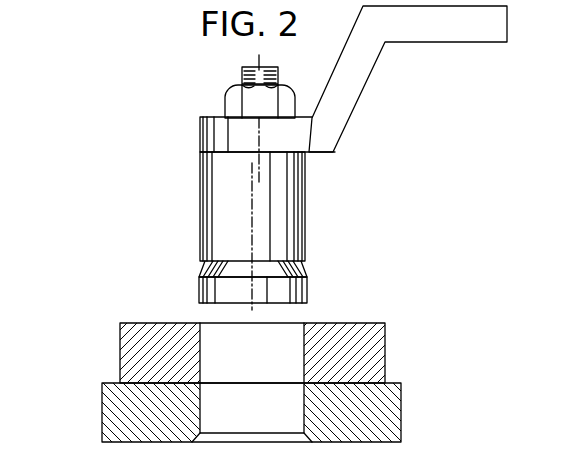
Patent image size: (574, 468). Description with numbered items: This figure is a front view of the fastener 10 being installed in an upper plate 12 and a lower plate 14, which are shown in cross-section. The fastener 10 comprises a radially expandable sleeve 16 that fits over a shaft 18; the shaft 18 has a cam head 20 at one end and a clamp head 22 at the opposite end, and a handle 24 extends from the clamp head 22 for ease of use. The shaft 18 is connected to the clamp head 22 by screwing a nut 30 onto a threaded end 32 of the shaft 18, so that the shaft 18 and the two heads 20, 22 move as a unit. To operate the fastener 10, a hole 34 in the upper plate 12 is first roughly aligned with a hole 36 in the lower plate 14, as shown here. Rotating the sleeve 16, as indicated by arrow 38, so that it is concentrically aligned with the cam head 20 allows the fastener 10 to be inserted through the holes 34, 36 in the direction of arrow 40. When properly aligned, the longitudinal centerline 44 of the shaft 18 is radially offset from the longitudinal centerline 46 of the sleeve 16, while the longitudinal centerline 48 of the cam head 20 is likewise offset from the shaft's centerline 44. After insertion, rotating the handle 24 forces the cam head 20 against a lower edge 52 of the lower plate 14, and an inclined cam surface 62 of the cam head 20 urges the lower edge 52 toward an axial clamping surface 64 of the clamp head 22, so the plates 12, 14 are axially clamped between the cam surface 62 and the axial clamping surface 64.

The fastener 10 is at (76, 122).
The upper plate 12 is at (385, 356).
The lower plate 14 is at (130, 442).
The radially expandable sleeve 16 is at (200, 188).
The shaft 18 is at (250, 67).
The cam head 20 is at (304, 292).
The clamp head 22 is at (200, 138).
The handle 24 is at (432, 42).
The nut 30 is at (226, 103).
The threaded end 32 is at (279, 72).
The hole 34 is at (252, 353).
The hole 36 is at (252, 408).
The arrow 38 is at (268, 210).
The arrow 40 is at (252, 310).
The longitudinal centerline of shaft 44 is at (257, 140).
The longitudinal centerline of sleeve 46 is at (252, 220).
The longitudinal centerline of cam head 48 is at (262, 265).
The lower edge 52 is at (304, 438).
The inclined cam surface 62 is at (300, 268).
The axial clamping surface 64 is at (309, 152).